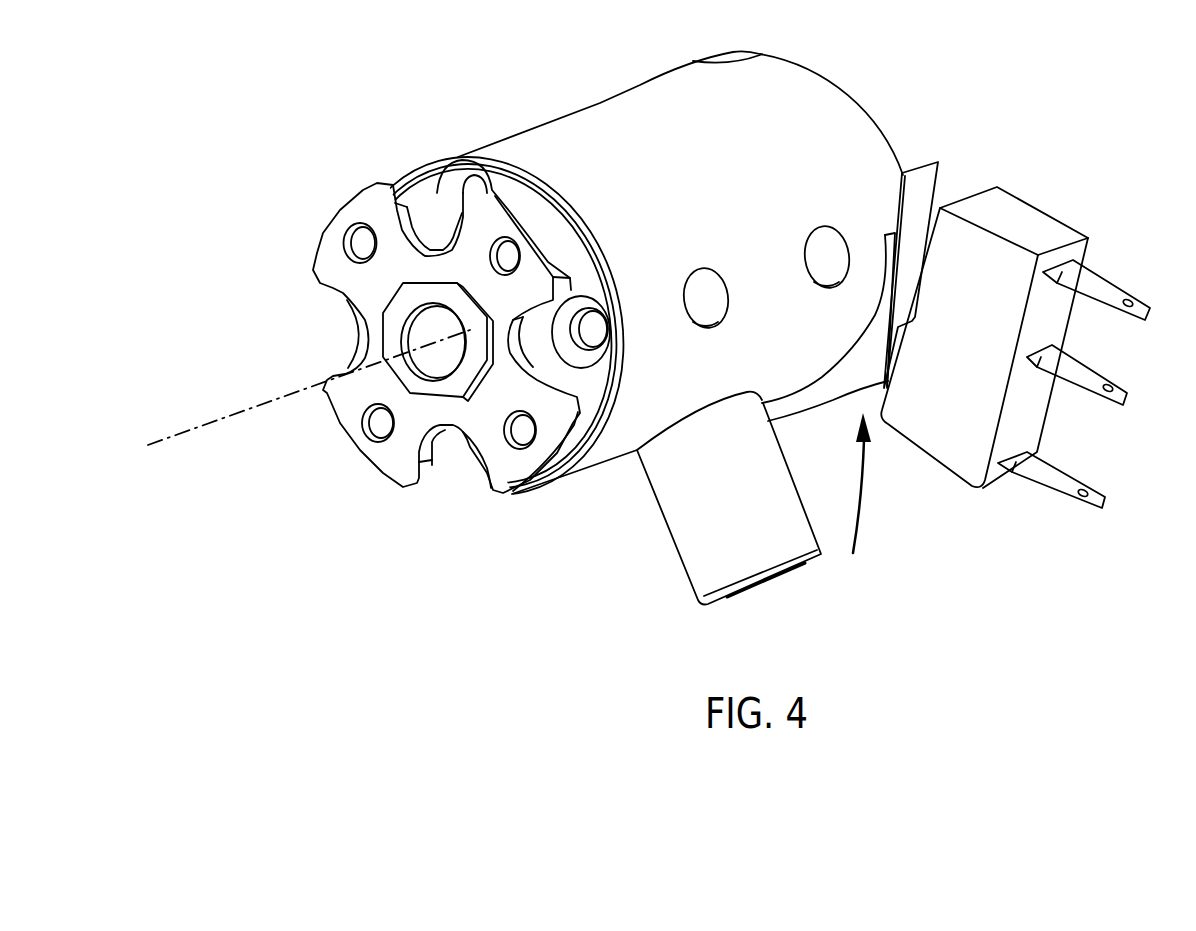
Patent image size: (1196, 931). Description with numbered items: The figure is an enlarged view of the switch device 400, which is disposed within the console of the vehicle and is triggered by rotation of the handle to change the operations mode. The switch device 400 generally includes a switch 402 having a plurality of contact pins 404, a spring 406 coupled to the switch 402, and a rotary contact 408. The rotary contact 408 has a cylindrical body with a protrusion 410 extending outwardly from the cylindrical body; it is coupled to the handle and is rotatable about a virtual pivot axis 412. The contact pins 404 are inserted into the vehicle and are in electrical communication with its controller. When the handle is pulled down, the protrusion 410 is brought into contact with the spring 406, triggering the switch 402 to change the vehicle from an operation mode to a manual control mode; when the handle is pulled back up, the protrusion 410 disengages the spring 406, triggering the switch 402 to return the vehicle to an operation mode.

The switch device 400 is at (330, 119).
The switch 402 is at (1020, 213).
The contact pins 404 is at (1107, 288).
The spring 406 is at (921, 172).
The rotary contact 408 is at (592, 102).
The protrusion 410 is at (678, 522).
The virtual pivot axis 412 is at (220, 420).